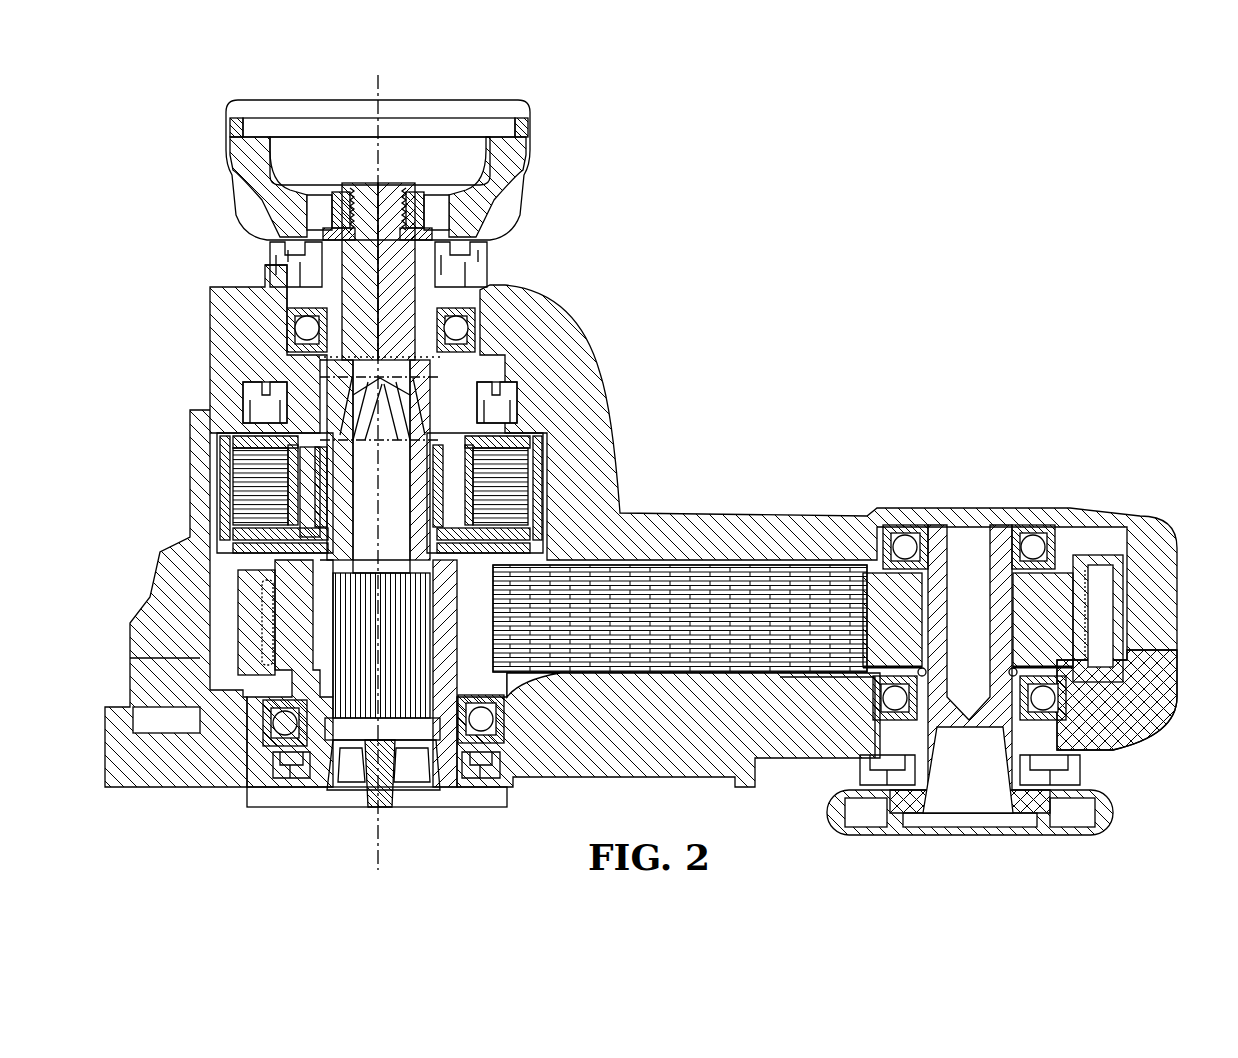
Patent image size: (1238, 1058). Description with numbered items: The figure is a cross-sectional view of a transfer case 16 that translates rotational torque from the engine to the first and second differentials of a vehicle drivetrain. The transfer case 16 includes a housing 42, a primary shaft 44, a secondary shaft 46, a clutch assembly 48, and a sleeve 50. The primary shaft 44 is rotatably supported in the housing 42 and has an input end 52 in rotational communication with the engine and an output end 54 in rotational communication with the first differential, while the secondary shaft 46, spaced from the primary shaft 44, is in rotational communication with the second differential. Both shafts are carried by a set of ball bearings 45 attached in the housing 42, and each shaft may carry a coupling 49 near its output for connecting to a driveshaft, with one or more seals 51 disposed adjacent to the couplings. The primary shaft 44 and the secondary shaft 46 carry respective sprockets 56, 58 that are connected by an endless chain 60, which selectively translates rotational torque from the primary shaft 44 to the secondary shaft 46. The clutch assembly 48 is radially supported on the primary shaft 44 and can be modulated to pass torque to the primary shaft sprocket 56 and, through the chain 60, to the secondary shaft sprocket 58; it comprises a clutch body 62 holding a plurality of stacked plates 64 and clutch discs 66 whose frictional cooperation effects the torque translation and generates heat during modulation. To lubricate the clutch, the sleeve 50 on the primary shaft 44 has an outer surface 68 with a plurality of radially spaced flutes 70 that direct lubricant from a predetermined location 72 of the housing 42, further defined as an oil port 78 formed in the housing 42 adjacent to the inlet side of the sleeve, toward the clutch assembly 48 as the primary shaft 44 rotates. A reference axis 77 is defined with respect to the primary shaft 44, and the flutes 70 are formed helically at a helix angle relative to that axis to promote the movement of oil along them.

The transfer case 16 is at (793, 355).
The housing 42 is at (578, 412).
The primary shaft 44 is at (354, 262).
The ball bearings 45 is at (458, 328).
The secondary shaft 46 is at (1000, 530).
The clutch assembly 48 is at (215, 484).
The coupling 49 is at (497, 158).
The sleeve 50 is at (440, 362).
The seals 51 is at (465, 240).
The input end 52 is at (385, 808).
The output end 54 is at (403, 183).
The primary shaft sprocket 56 is at (254, 604).
The secondary shaft sprocket 58 is at (1062, 625).
The endless chain 60 is at (718, 585).
The clutch body 62 is at (470, 447).
The stacked plates 64 is at (522, 470).
The clutch discs 66 is at (522, 503).
The outer surface 68 is at (438, 356).
The flutes 70 is at (448, 352).
The predetermined location 72 is at (318, 357).
The reference axis 77 is at (386, 82).
The oil port 78 is at (290, 335).